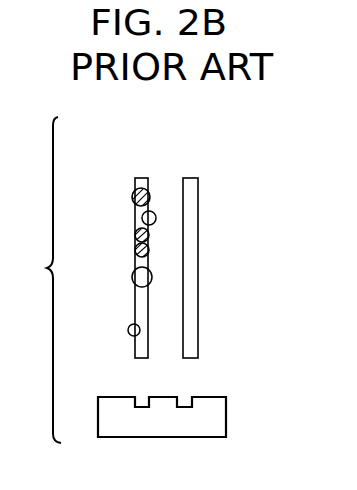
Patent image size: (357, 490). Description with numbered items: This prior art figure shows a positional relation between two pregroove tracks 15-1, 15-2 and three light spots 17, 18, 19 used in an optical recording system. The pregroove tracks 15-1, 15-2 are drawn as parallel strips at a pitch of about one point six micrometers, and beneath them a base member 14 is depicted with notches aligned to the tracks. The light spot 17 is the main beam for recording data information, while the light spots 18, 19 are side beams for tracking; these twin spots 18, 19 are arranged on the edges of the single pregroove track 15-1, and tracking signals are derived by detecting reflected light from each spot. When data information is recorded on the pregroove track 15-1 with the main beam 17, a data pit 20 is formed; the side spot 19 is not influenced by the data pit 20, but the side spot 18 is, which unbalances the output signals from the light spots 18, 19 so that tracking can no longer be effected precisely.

The base block 14 is at (227, 421).
The pregroove track 15-1 is at (141, 177).
The pregroove track 15-2 is at (192, 177).
The light spot (main beam) 17 is at (132, 277).
The light spot (side beam) 18 is at (142, 218).
The light spot (side beam) 19 is at (128, 330).
The data pit 20 is at (133, 198).